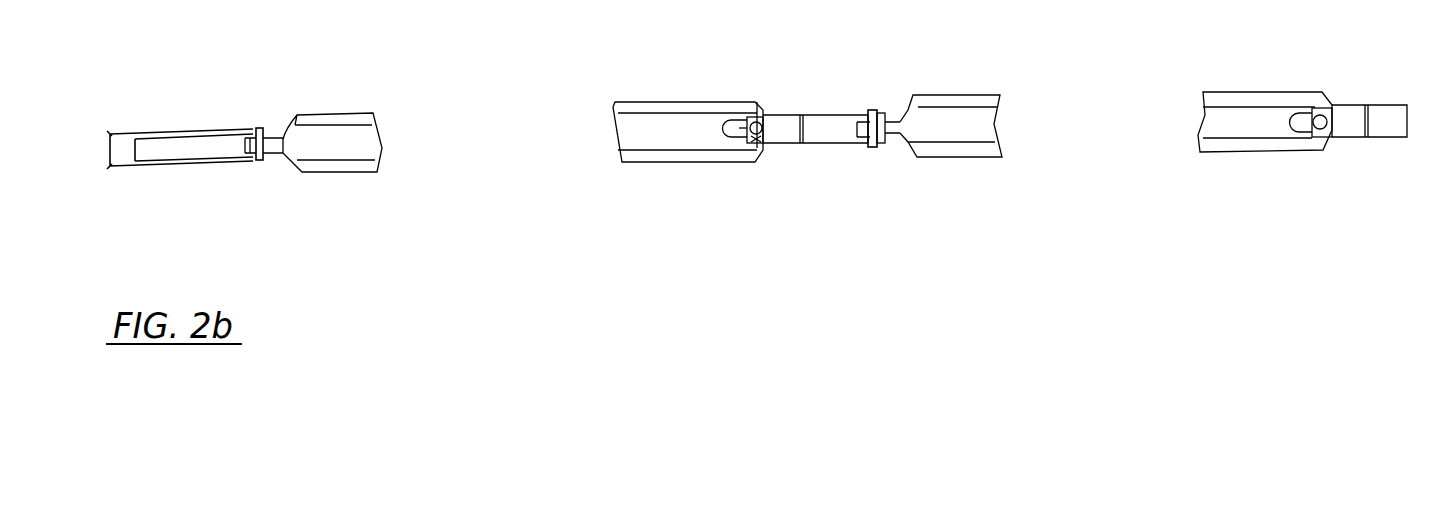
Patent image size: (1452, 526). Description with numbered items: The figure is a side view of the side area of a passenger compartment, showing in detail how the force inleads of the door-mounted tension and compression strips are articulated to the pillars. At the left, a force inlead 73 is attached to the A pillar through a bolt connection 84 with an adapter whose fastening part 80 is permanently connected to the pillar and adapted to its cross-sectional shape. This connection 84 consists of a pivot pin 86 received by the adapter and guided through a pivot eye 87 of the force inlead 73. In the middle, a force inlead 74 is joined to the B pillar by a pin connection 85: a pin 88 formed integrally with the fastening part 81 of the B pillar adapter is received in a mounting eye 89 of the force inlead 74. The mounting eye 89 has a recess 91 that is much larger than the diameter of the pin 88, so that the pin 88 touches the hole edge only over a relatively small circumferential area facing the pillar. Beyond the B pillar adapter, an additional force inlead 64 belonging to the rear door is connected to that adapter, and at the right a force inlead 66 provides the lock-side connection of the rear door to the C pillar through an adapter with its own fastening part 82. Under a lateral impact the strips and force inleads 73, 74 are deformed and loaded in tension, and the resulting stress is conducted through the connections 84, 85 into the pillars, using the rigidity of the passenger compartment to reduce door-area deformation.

The fastening part 80 is at (158, 125).
The bolt connection 84 is at (253, 121).
The pivot pin 86 is at (250, 162).
The pivot eye 87 is at (273, 158).
The force inlead 73 is at (368, 173).
The force inlead 74 is at (645, 157).
The recess 91 is at (737, 130).
The mounting eye 89 is at (737, 135).
The pin 88 is at (767, 149).
The pin connection 85 is at (757, 101).
The fastening part 81 is at (812, 115).
The additional force inlead 64 is at (987, 152).
The force inlead 66 is at (1262, 110).
The fastening part 82 is at (1353, 105).